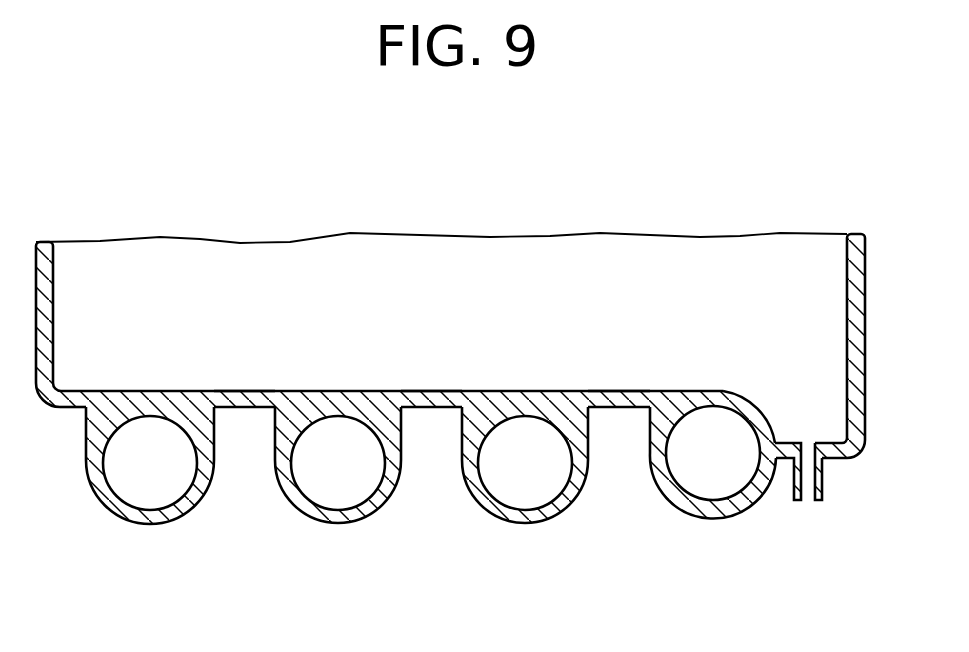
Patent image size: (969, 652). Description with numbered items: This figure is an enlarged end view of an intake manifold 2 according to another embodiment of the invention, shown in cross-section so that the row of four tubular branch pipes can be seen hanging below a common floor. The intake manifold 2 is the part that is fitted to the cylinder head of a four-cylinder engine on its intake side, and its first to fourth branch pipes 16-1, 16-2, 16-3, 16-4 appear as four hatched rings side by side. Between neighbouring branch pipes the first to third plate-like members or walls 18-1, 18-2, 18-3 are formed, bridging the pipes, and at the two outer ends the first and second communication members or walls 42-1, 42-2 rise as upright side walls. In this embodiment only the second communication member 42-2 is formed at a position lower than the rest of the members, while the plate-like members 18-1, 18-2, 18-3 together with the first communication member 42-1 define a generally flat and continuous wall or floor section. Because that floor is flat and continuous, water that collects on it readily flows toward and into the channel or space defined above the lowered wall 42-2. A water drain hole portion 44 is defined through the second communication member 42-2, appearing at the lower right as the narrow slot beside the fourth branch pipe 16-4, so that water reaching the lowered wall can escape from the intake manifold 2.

The intake manifold 2 is at (658, 497).
The first communication member 42-1 is at (78, 387).
The second communication member 42-2 is at (838, 459).
The first branch pipe 16-1 is at (127, 520).
The second branch pipe 16-2 is at (320, 520).
The third branch pipe 16-3 is at (510, 520).
The fourth branch pipe 16-4 is at (703, 517).
The first plate-like member 18-1 is at (250, 390).
The second plate-like member 18-2 is at (630, 388).
The third plate-like member 18-3 is at (433, 388).
The water drain hole portion 44 is at (808, 500).